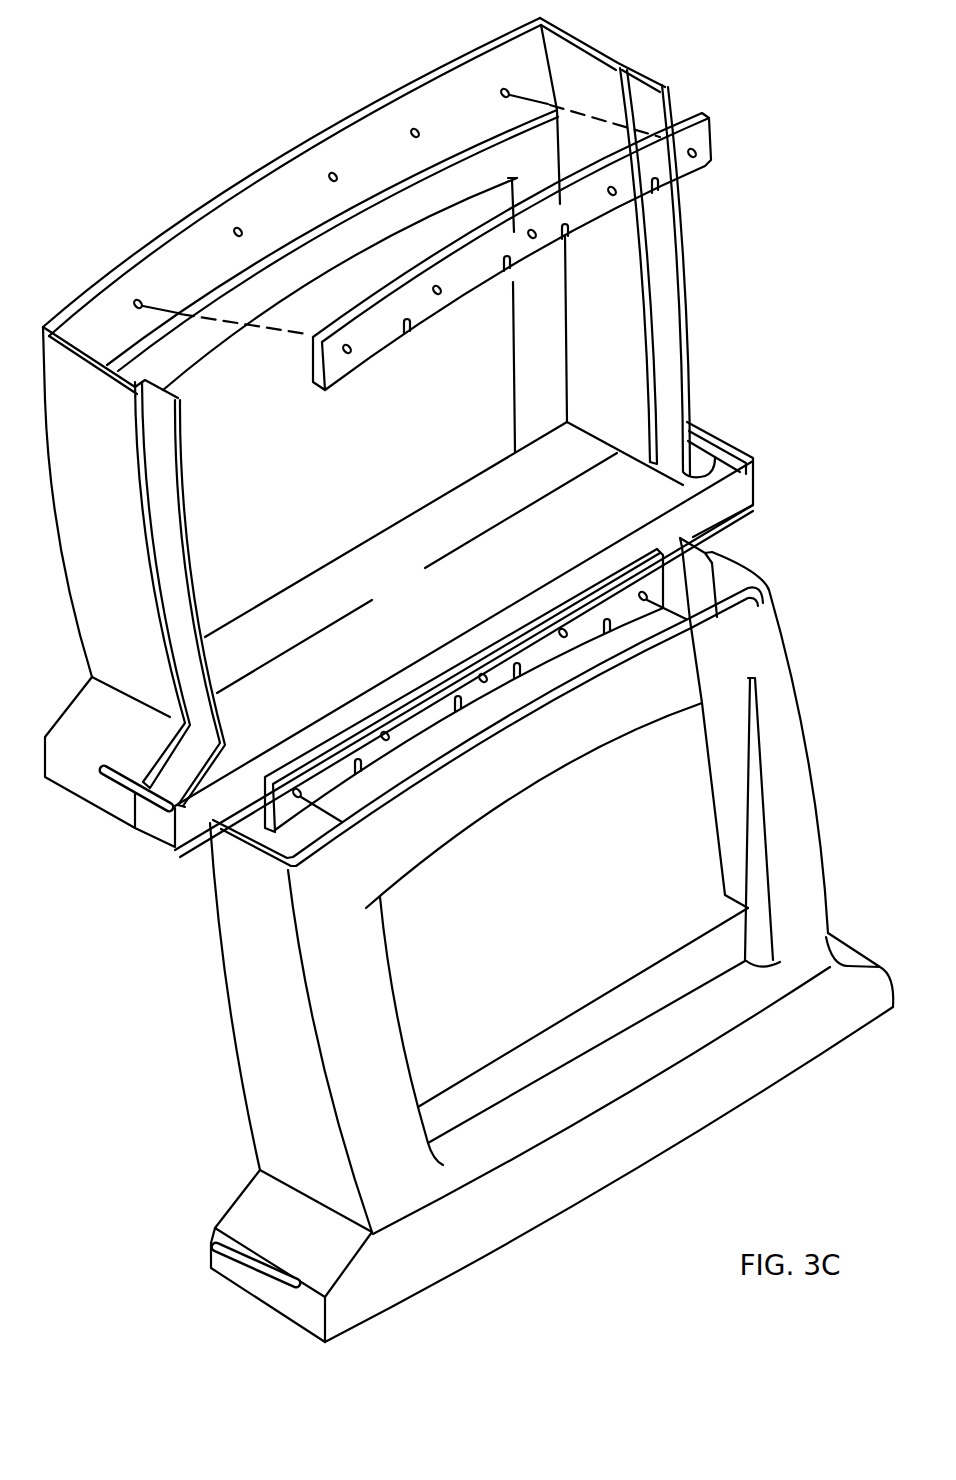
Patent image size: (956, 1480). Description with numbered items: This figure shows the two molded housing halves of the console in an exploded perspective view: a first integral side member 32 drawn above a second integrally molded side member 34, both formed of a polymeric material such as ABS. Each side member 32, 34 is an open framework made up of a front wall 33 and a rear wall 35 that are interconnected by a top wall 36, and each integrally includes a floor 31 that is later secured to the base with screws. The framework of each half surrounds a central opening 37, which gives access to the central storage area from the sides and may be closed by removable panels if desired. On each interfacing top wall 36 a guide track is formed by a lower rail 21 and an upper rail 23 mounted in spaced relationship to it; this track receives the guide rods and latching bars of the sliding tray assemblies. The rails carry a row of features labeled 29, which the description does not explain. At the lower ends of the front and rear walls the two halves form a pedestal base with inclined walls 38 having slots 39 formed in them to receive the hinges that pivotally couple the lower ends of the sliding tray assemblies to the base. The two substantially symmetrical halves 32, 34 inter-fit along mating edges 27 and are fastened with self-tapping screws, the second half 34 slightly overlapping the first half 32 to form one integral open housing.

The lower rail 21 is at (381, 177).
The upper rail 23 is at (342, 400).
The mating edges 27 is at (642, 318).
The holes and slots 29 is at (656, 192).
The floor 31 is at (384, 594).
The first integral side member 32 is at (612, 43).
The front wall 33 is at (93, 590).
The second integrally molded side member 34 is at (794, 624).
The rear wall 35 is at (688, 295).
The top wall 36 is at (283, 173).
The central opening 37 is at (292, 472).
The inclined walls 38 is at (103, 740).
The slots 39 is at (165, 812).